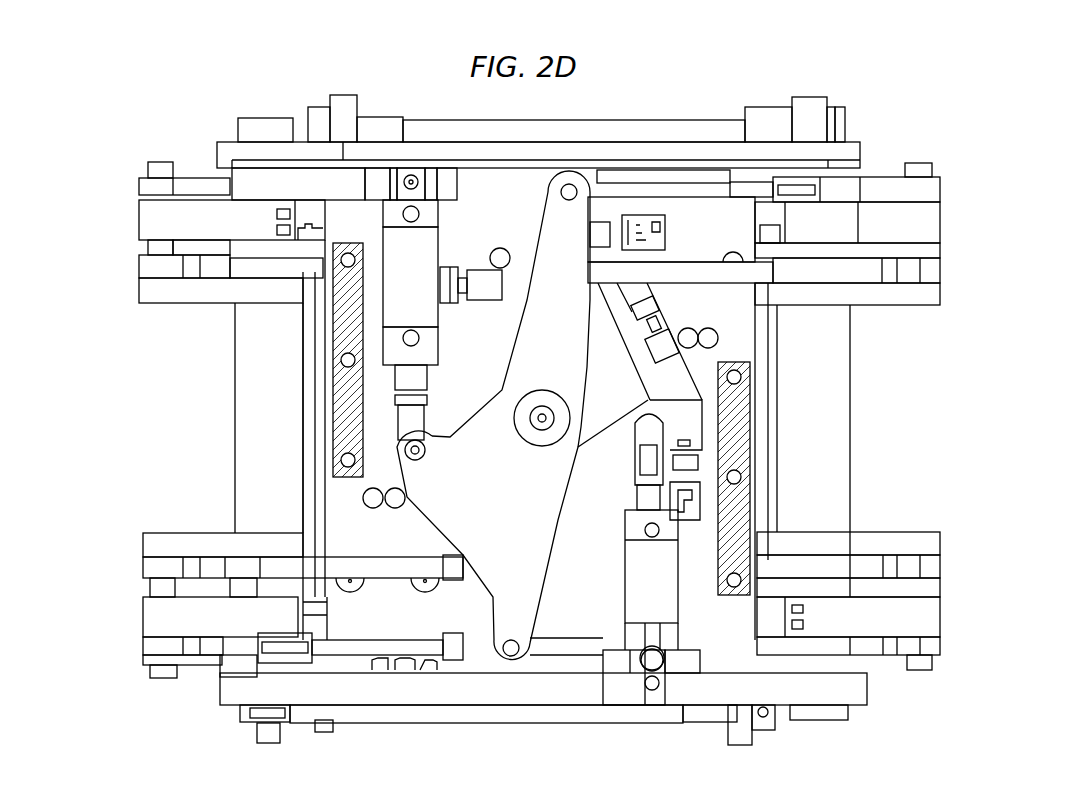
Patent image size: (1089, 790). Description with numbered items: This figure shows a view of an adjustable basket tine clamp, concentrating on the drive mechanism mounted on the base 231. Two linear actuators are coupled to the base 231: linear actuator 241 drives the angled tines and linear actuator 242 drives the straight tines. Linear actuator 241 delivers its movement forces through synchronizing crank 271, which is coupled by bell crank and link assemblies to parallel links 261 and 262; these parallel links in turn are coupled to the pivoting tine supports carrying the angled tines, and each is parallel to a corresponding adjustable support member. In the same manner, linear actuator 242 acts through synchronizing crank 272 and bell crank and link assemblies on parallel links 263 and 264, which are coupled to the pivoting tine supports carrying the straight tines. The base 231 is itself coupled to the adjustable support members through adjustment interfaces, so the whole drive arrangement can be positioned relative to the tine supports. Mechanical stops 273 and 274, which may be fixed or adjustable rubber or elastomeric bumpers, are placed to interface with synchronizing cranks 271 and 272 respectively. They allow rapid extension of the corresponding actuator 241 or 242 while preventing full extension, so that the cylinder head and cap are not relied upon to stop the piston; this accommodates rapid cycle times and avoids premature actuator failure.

The base 231 is at (532, 233).
The linear actuator 241 is at (440, 313).
The linear actuator 242 is at (647, 588).
The parallel link 261 is at (139, 184).
The parallel link 262 is at (940, 180).
The parallel link 263 is at (139, 266).
The parallel link 264 is at (940, 266).
The synchronizing crank 271 is at (437, 518).
The synchronizing crank 272 is at (643, 383).
The mechanical stop 273 is at (483, 268).
The mechanical stop 274 is at (712, 320).